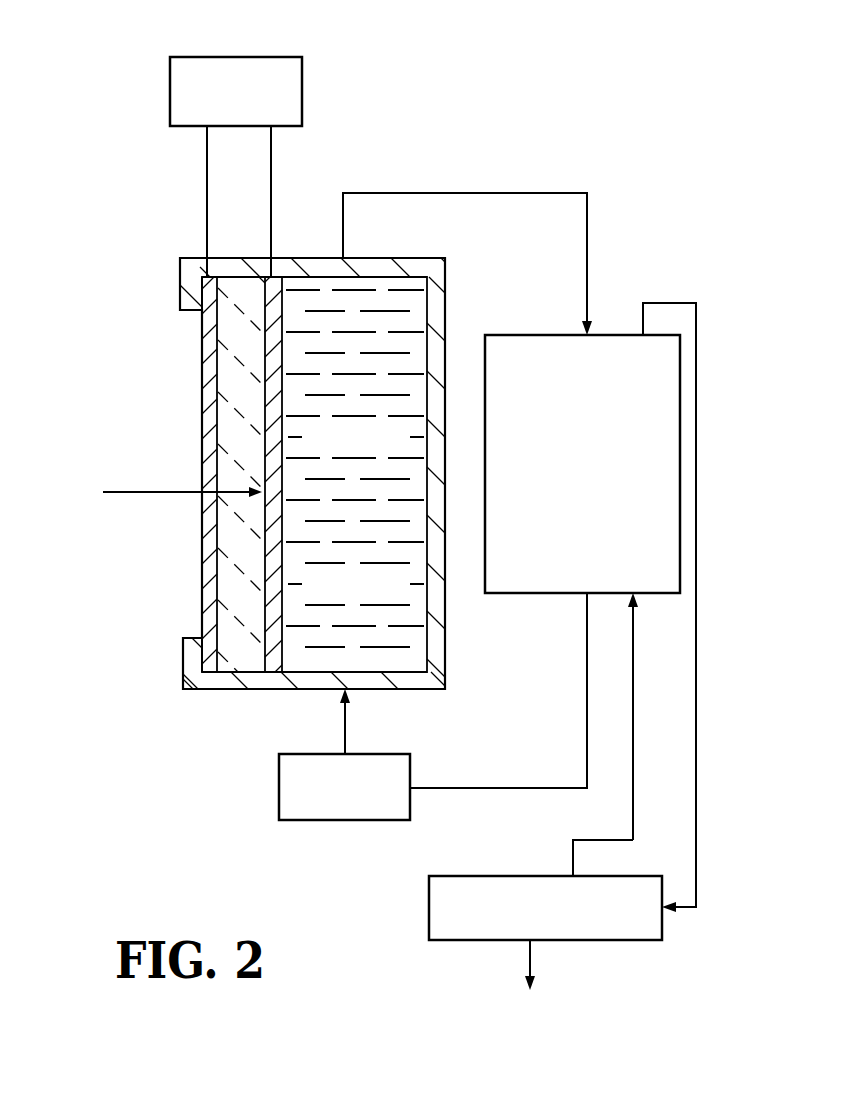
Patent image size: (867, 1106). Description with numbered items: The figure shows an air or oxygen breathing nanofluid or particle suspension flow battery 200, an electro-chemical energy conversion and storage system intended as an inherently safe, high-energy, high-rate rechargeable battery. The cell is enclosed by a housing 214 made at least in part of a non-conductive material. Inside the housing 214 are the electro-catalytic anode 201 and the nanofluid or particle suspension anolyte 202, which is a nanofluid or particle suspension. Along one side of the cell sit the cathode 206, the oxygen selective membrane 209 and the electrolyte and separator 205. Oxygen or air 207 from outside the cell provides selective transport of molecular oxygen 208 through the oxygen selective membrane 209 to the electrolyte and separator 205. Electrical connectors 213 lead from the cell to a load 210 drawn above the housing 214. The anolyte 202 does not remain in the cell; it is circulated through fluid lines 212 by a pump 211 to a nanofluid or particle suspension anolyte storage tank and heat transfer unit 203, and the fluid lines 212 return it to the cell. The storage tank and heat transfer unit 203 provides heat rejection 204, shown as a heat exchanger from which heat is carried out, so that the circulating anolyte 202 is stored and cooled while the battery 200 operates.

The air or oxygen breathing nanofluid or particle suspension flow battery 200 is at (517, 45).
The electro-catalytic anode 201 is at (355, 376).
The nanofluid or particle suspension anolyte 202 is at (380, 601).
The nanofluid or particle suspension anolyte storage tank and heat transfer unit 203 is at (618, 388).
The heat rejection 204 is at (500, 876).
The electrolyte and separator 205 is at (246, 638).
The cathode 206 is at (202, 343).
The oxygen or air 207 is at (140, 414).
The selective transport of molecular oxygen 208 is at (118, 492).
The oxygen selective membrane 209 is at (200, 604).
The load 210 is at (302, 90).
The pump 211 is at (350, 822).
The fluid lines 212 is at (587, 258).
The electrical connectors 213 is at (271, 196).
The housing 214 is at (445, 300).